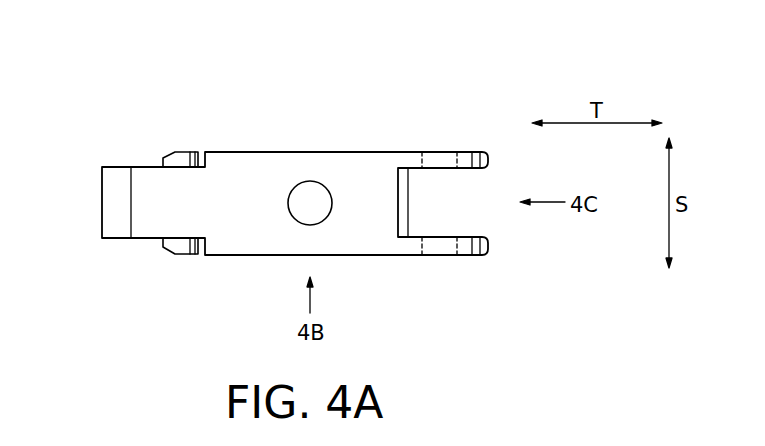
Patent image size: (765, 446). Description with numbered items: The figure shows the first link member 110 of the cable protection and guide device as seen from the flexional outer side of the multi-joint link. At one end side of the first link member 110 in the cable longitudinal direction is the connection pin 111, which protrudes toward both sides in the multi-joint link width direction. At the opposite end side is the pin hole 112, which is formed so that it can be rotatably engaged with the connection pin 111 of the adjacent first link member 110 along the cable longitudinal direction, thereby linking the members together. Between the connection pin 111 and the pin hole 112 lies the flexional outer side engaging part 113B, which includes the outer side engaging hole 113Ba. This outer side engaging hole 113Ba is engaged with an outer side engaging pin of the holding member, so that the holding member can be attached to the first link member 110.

The first link member 110 is at (265, 132).
The connection pin 111 is at (187, 150).
The pin hole 112 is at (453, 153).
The outer side engaging hole 113Ba is at (281, 157).
The flexional outer side engaging part 113B is at (299, 191).